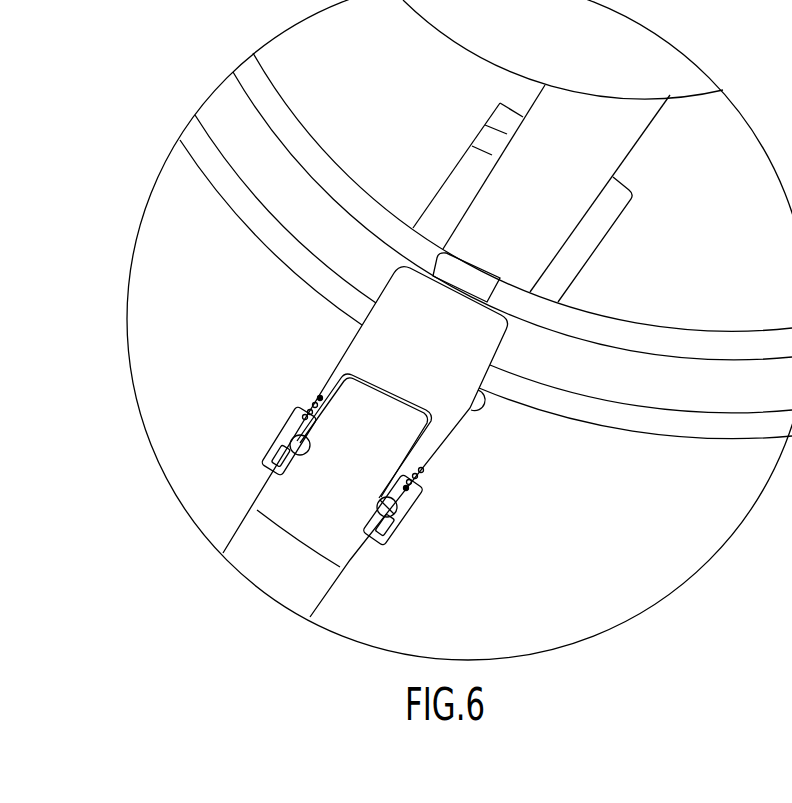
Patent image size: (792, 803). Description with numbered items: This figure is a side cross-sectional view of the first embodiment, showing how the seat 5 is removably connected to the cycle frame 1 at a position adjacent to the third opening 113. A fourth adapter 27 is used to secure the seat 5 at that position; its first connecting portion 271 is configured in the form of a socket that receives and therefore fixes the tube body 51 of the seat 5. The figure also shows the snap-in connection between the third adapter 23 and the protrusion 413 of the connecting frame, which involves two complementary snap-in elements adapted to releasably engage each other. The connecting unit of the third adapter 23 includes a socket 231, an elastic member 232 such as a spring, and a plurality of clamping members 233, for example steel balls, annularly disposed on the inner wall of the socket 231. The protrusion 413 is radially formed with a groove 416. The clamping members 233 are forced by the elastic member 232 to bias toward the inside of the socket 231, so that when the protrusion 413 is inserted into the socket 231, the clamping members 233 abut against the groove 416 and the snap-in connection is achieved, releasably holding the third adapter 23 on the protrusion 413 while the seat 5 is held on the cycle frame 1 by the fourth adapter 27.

The cycle frame 1 is at (257, 220).
The seat 5 is at (697, 77).
The third adapter 23 is at (390, 330).
The fourth adapter 27 is at (440, 190).
The tube body 51 is at (562, 108).
The third opening 113 is at (447, 252).
The socket 231 is at (323, 403).
The elastic member 232 is at (320, 398).
The clamping members 233 is at (293, 443).
The first connecting portion 271 is at (590, 232).
The protrusion 413 is at (268, 567).
The groove 416 is at (387, 533).